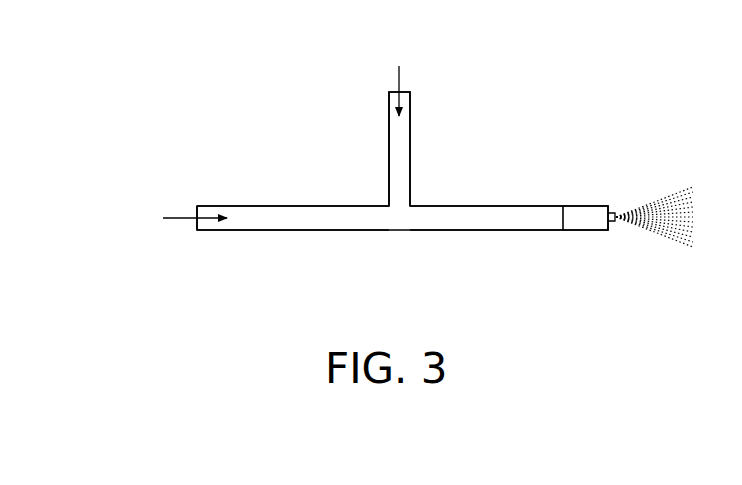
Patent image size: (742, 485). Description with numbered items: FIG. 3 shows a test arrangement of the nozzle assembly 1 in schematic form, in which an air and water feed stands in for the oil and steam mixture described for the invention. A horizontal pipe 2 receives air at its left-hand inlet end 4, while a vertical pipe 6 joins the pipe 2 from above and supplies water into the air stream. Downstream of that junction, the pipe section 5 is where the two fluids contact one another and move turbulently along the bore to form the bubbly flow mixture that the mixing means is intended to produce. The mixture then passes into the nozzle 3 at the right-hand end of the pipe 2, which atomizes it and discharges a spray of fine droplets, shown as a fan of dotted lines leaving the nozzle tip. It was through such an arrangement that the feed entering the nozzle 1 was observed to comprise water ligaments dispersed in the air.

The nozzle 1 is at (303, 147).
The air pipe 2 is at (402, 237).
The nozzle 3 is at (585, 212).
The air inlet section 4 is at (313, 206).
The mixing section 5 is at (492, 213).
The water supply pipe 6 is at (389, 160).